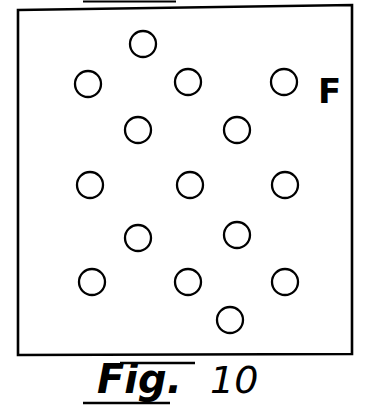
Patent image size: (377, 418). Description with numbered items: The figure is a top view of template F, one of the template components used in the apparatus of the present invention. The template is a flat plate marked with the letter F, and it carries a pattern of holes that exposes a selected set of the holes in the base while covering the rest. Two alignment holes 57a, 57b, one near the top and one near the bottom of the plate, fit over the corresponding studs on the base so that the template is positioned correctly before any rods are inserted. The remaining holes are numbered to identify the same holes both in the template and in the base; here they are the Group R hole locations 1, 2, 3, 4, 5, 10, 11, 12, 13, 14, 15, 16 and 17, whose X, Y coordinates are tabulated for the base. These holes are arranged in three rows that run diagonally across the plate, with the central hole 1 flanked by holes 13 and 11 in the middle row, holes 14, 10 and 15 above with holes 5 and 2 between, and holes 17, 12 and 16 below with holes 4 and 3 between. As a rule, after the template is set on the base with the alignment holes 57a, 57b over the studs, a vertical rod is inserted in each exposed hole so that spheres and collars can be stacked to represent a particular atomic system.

The alignment hole 57a is at (152, 35).
The alignment hole 57b is at (244, 318).
The hole location 14 is at (89, 71).
The hole location 10 is at (206, 63).
The hole location 15 is at (301, 61).
The hole location 5 is at (156, 110).
The hole location 2 is at (246, 121).
The hole location 13 is at (99, 176).
The hole location 1 is at (199, 176).
The hole location 11 is at (294, 176).
The hole location 4 is at (147, 229).
The hole location 3 is at (246, 226).
The hole location 17 is at (91, 269).
The hole location 12 is at (184, 270).
The hole location 16 is at (292, 270).